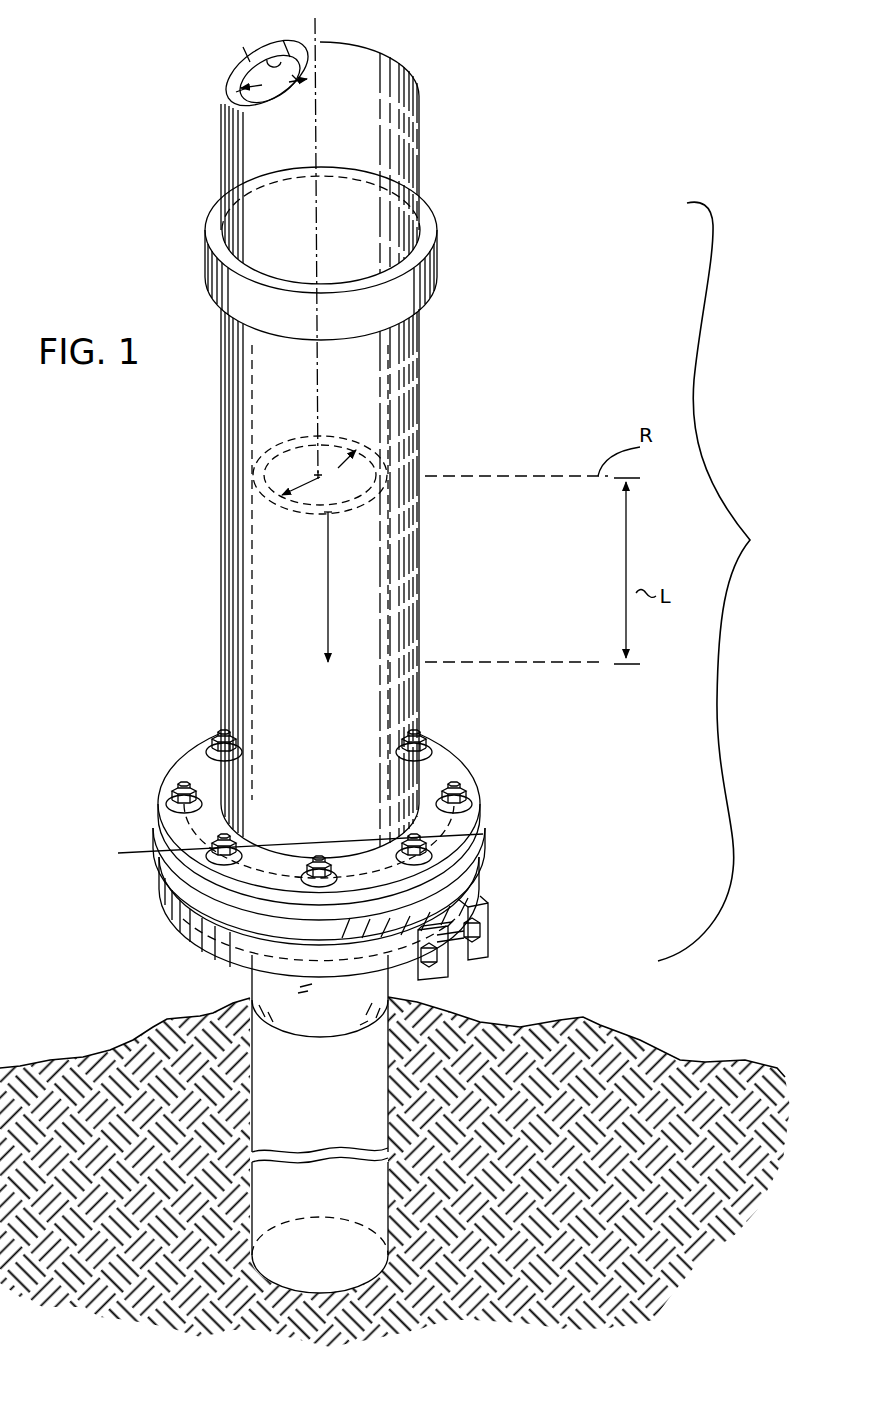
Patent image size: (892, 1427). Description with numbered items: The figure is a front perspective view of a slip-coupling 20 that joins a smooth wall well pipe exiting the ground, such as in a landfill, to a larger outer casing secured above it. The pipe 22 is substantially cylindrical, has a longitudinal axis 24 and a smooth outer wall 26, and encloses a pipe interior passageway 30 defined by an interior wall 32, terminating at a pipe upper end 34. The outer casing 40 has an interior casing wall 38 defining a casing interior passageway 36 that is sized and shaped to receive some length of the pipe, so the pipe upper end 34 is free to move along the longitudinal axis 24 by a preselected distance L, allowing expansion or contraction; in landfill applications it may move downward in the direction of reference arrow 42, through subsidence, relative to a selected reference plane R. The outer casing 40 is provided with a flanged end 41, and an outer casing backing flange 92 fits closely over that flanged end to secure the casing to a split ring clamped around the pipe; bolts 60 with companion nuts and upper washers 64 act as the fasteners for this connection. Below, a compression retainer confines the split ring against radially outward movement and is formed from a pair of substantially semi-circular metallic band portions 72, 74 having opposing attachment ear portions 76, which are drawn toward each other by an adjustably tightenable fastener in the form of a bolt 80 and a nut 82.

The slip-coupling 20 is at (723, 581).
The pipe 22 is at (250, 982).
The longitudinal axis 24 is at (320, 376).
The smooth outer wall 26 is at (309, 1011).
The pipe interior passageway 30 is at (319, 472).
The interior wall 32 is at (262, 465).
The pipe upper end 34 is at (290, 445).
The casing interior passageway 36 is at (274, 83).
The interior casing wall 38 is at (275, 62).
The outer casing 40 is at (418, 430).
The flanged end 41 is at (483, 834).
The reference arrow 42 is at (328, 590).
The bolts 60 is at (213, 740).
The upper washers 64 is at (205, 755).
The semi-circular metallic band portion 72 is at (190, 935).
The semi-circular metallic band portion 74 is at (484, 889).
The opposing attachment ear portions 76 is at (490, 951).
The bolt 80 is at (455, 950).
The nut 82 is at (482, 925).
The outer casing backing flange 92 is at (445, 778).